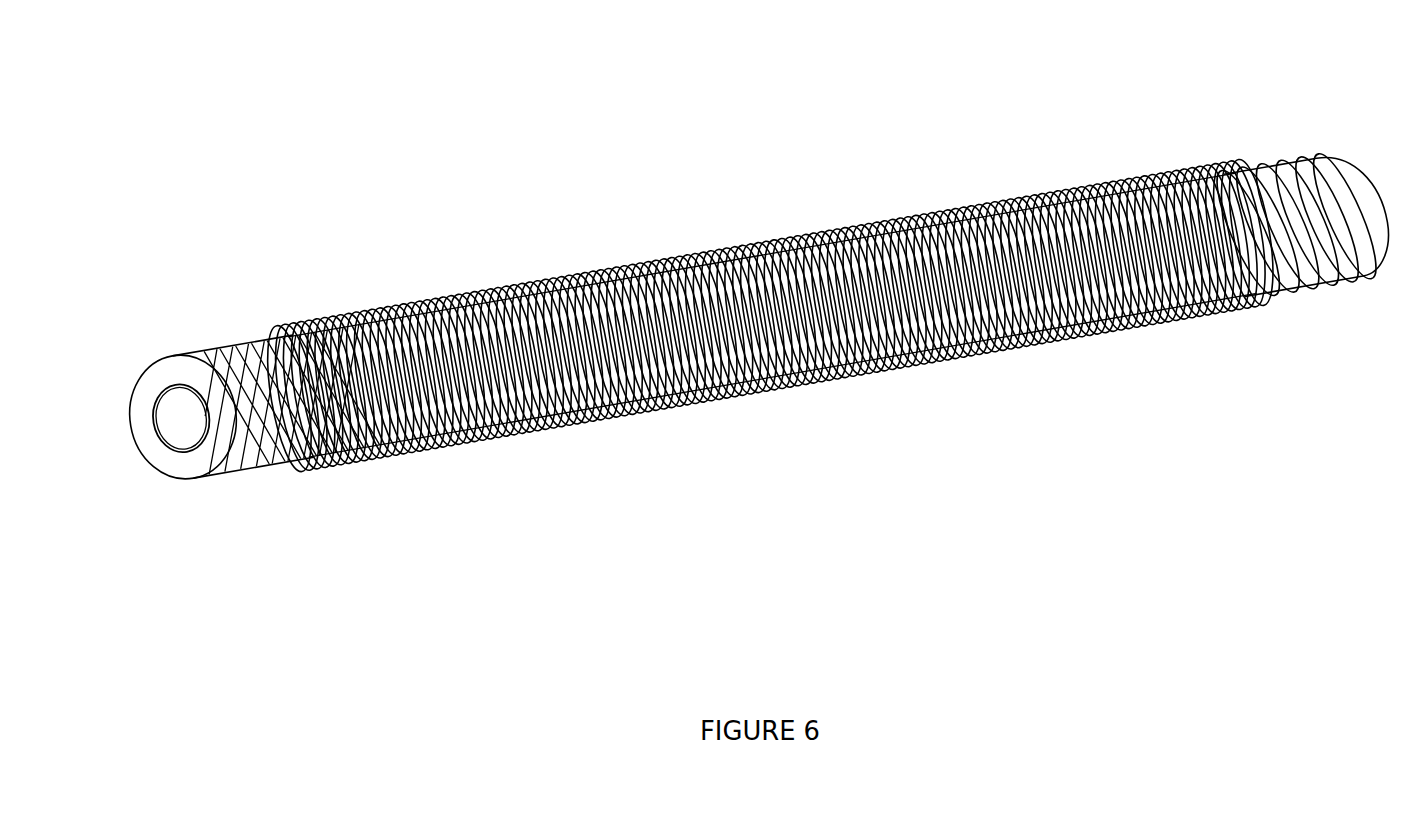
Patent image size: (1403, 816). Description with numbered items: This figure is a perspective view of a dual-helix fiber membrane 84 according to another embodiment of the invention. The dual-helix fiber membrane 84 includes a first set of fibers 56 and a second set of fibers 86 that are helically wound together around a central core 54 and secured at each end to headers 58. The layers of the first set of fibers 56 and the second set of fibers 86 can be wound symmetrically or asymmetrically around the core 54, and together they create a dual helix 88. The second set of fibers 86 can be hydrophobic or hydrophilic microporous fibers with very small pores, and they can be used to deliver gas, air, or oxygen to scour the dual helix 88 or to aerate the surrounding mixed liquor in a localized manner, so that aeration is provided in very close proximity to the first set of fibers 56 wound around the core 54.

The dual-helix fiber membrane 84 is at (727, 165).
The dual helix 88 is at (838, 222).
The second set of fibers 86 is at (285, 355).
The first set of fibers 56 is at (318, 367).
The core 54 is at (135, 387).
The headers 58 is at (177, 470).